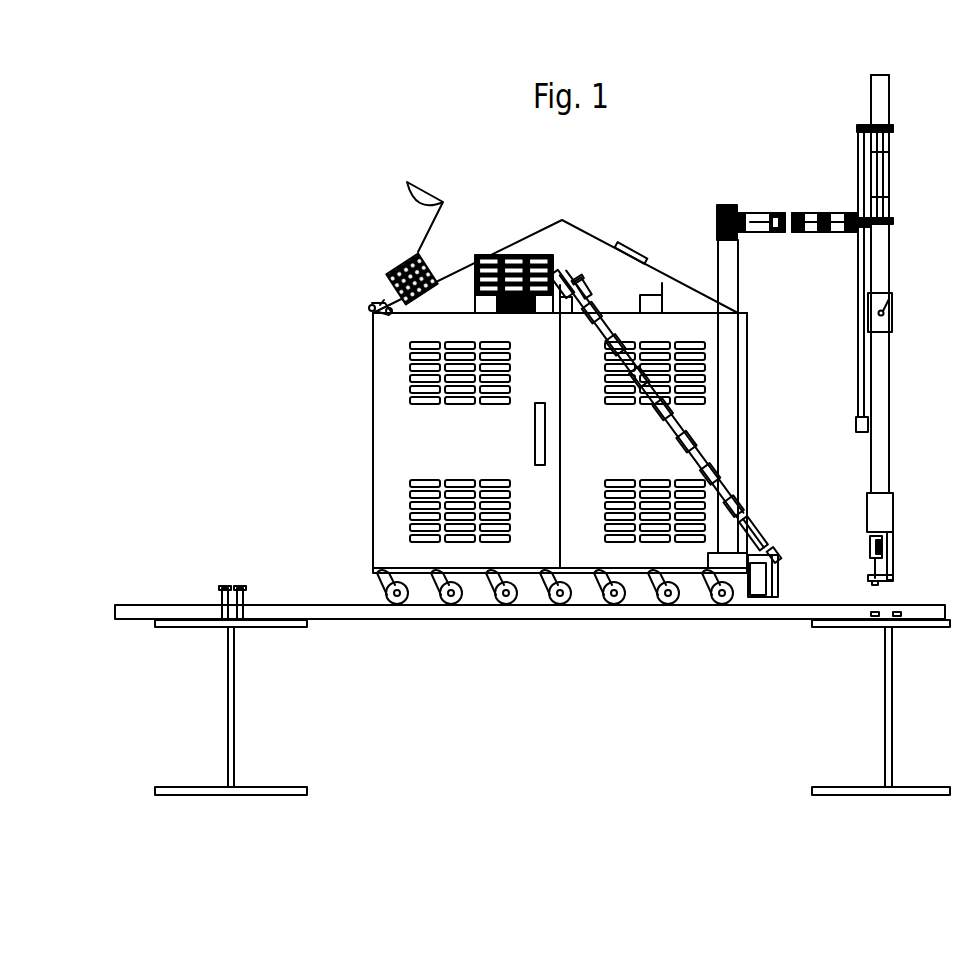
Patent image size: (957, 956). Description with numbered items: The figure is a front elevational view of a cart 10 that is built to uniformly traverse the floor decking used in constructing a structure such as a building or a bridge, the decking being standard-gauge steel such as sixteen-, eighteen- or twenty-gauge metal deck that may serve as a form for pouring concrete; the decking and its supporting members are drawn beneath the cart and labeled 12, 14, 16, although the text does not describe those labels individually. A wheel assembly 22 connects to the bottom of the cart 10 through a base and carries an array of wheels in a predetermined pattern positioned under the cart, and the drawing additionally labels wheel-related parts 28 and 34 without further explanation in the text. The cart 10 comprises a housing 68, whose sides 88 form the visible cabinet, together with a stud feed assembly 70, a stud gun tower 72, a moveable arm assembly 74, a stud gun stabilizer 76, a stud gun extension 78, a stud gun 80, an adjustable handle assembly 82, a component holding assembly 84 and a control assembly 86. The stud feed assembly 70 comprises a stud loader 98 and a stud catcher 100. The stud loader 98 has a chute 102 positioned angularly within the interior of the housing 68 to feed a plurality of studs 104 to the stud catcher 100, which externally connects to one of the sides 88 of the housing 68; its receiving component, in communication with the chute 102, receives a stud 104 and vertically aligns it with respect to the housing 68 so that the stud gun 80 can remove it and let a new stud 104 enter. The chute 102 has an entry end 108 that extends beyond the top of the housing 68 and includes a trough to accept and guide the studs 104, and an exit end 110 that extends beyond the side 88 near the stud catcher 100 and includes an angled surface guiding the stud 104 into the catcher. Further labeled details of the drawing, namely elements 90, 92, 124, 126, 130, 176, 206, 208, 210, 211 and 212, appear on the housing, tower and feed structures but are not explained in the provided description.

The cart 10 is at (316, 392).
The floor structure 12 is at (530, 646).
The floor plate 14 is at (530, 646).
The support surface 16 is at (383, 620).
The wheel assembly 22 is at (498, 583).
The caster 28 is at (498, 583).
The roller 34 is at (388, 590).
The housing 68 is at (390, 432).
The stud feed assembly 70 is at (620, 321).
The stud gun tower 72 is at (757, 300).
The moveable arm assembly 74 is at (800, 213).
The stud gun stabilizer 76 is at (893, 184).
The stud gun extension 78 is at (880, 399).
The stud gun 80 is at (875, 503).
The adjustable handle assembly 82 is at (889, 286).
The component holding assembly 84 is at (480, 317).
The control assembly 86 is at (660, 262).
The side 88 is at (372, 351).
The base plate 90 is at (383, 548).
The roof 92 is at (594, 234).
The stud loader 98 is at (651, 393).
The stud catcher 100 is at (777, 582).
The chute 102 is at (678, 453).
The stud 104 is at (538, 258).
The entry end 108 is at (578, 274).
The exit end 110 is at (757, 528).
The foot block 124 is at (730, 562).
The column 126 is at (730, 404).
The upper bracket 130 is at (720, 238).
The pin 176 is at (893, 316).
The mount block 206 is at (472, 294).
The hatched cover 208 is at (432, 275).
The vent block 210 is at (501, 255).
The hinge link 211 is at (384, 302).
The hinge 212 is at (405, 262).